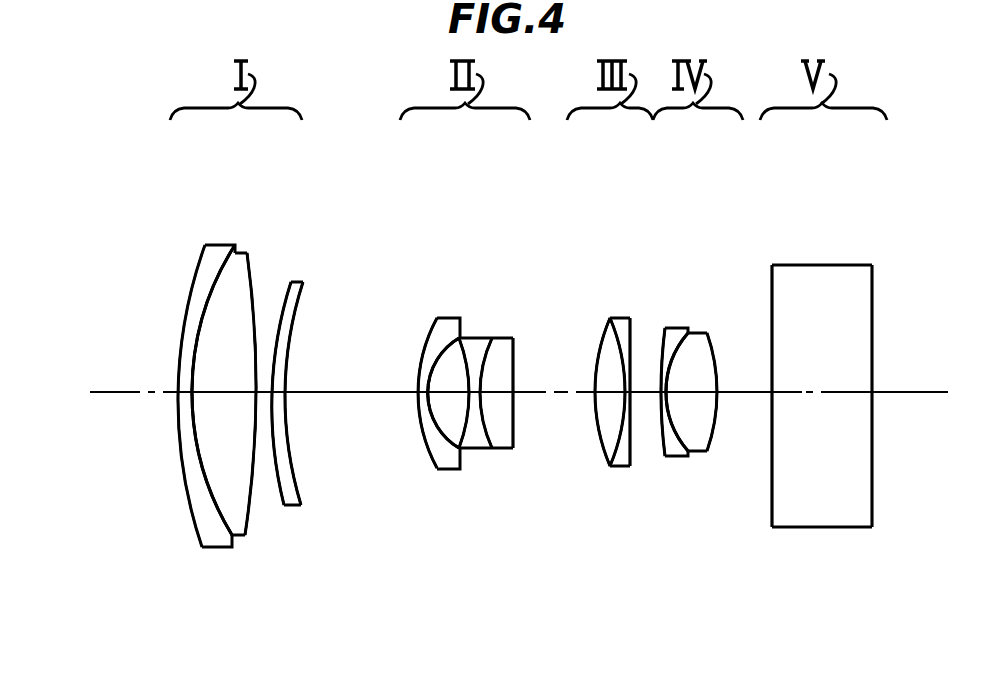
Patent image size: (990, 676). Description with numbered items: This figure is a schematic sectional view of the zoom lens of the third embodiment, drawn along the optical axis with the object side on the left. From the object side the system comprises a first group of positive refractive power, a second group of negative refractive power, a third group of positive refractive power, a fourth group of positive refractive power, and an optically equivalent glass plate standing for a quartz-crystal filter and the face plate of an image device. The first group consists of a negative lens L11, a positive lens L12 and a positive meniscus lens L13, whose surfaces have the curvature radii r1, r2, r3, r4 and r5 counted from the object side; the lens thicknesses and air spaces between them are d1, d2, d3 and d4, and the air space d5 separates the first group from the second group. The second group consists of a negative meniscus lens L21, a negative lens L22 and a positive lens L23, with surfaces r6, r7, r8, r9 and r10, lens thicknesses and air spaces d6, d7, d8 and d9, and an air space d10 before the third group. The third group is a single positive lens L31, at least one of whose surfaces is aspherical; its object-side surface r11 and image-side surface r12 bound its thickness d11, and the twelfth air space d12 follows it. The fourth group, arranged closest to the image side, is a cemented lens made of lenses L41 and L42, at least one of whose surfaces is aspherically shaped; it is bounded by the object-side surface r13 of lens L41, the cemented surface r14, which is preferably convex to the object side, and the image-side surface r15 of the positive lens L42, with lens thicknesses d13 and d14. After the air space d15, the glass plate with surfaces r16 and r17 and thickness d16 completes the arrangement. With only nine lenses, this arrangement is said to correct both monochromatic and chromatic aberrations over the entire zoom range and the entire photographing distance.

The lens thickness d1 is at (178, 392).
The lens thickness d2 is at (227, 392).
The air space d3 is at (258, 345).
The lens thickness d4 is at (288, 312).
The air space d5 is at (335, 392).
The lens thickness d6 is at (420, 390).
The lens thickness d7 is at (450, 392).
The air space d8 is at (475, 392).
The lens thickness d9 is at (506, 392).
The air space d10 is at (541, 392).
The lens thickness d11 is at (613, 320).
The twelfth air space d12 is at (648, 392).
The lens thickness d13 is at (667, 392).
The lens thickness d14 is at (702, 335).
The air space d15 is at (732, 392).
The plate thickness d16 is at (858, 393).
The curvature radius of first lens surface r1 is at (183, 447).
The curvature radius of second lens surface r2 is at (212, 503).
The curvature radius of third lens surface r3 is at (253, 503).
The curvature radius of fourth lens surface r4 is at (281, 505).
The curvature radius of fifth lens surface r5 is at (284, 462).
The curvature radius of sixth lens surface r6 is at (420, 422).
The curvature radius of seventh lens surface r7 is at (440, 457).
The curvature radius of eighth lens surface r8 is at (437, 492).
The curvature radius of ninth lens surface r9 is at (483, 450).
The curvature radius of tenth lens surface r10 is at (515, 450).
The object-side surface of lens L31 r11 is at (600, 440).
The image-side surface of lens L31 r12 is at (620, 467).
The object-side surface of lens L41 r13 is at (658, 466).
The cemented surface r14 is at (696, 432).
The image-side surface of lens L42 r15 is at (710, 456).
The curvature radius of sixteenth surface r16 is at (772, 493).
The curvature radius of seventeenth surface r17 is at (872, 507).
The negative lens L11 is at (145, 438).
The positive lens L12 is at (184, 458).
The positive meniscus lens L13 is at (310, 461).
The negative meniscus lens L21 is at (404, 448).
The negative lens L22 is at (436, 498).
The positive lens L23 is at (513, 504).
The positive lens L31 is at (587, 461).
The lens of cemented fourth group L41 is at (662, 488).
The positive refractive power lens L42 is at (724, 490).